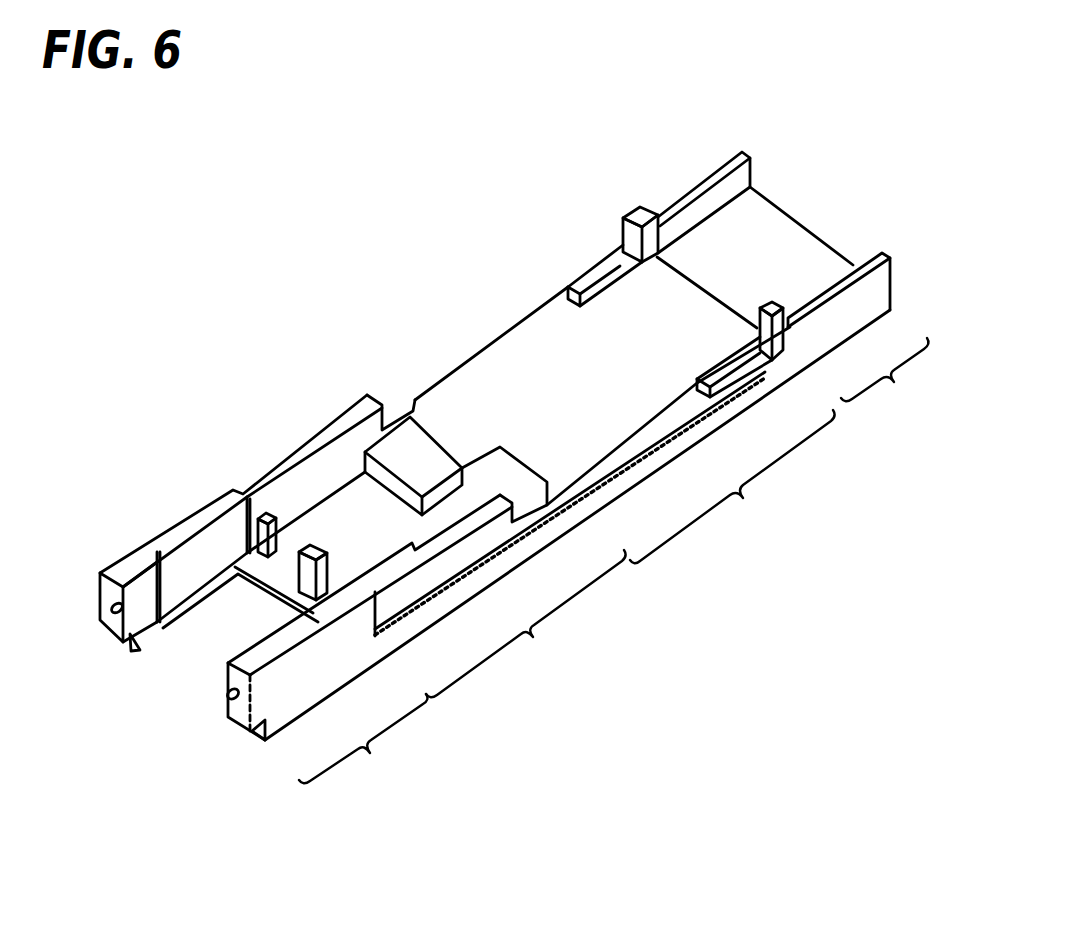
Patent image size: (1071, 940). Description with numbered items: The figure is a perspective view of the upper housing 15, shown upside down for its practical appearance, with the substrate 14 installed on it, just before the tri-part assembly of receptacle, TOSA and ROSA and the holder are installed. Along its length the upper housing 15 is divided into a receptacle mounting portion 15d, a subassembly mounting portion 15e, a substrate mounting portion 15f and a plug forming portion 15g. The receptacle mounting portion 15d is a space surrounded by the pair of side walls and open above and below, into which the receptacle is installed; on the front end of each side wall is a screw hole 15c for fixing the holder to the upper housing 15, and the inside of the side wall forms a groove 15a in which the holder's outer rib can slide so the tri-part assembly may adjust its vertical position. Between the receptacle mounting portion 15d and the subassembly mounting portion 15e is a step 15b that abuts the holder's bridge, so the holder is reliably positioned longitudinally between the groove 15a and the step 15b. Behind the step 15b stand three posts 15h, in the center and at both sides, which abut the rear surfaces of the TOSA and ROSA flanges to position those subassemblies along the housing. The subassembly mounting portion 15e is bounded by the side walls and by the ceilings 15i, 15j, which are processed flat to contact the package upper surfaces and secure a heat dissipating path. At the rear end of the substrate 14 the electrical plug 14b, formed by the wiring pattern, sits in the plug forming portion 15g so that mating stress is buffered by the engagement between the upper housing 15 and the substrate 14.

The substrate 14 is at (567, 378).
The electrical plug 14b is at (790, 248).
The upper housing 15 is at (373, 303).
The groove 15a is at (157, 554).
The step 15b is at (262, 598).
The screw hole 15c is at (114, 612).
The receptacle mounting portion 15d is at (363, 738).
The subassembly mounting portion 15e is at (526, 623).
The substrate mounting portion 15f is at (732, 486).
The plug forming portion 15g is at (890, 376).
The posts 15h is at (313, 548).
The ceiling 15i is at (356, 530).
The ceiling 15j is at (473, 487).